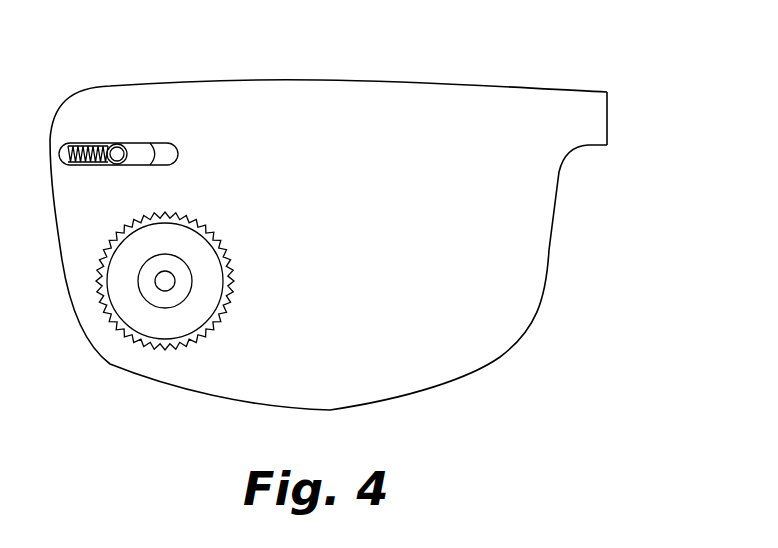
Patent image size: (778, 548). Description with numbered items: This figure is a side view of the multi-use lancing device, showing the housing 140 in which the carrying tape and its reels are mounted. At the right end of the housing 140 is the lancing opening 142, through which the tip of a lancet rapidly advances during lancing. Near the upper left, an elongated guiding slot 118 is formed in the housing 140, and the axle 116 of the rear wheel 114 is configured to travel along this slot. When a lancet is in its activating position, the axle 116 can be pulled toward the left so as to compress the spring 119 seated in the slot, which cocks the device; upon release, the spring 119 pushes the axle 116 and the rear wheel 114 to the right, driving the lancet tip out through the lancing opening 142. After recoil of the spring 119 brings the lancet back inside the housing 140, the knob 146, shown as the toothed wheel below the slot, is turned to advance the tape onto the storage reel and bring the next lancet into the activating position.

The housing 140 is at (372, 80).
The lancing opening 142 is at (607, 117).
The rear wheel 114 is at (138, 157).
The axle 116 is at (118, 148).
The guiding slot 118 is at (143, 143).
The spring 119 is at (84, 163).
The knob 146 is at (210, 285).